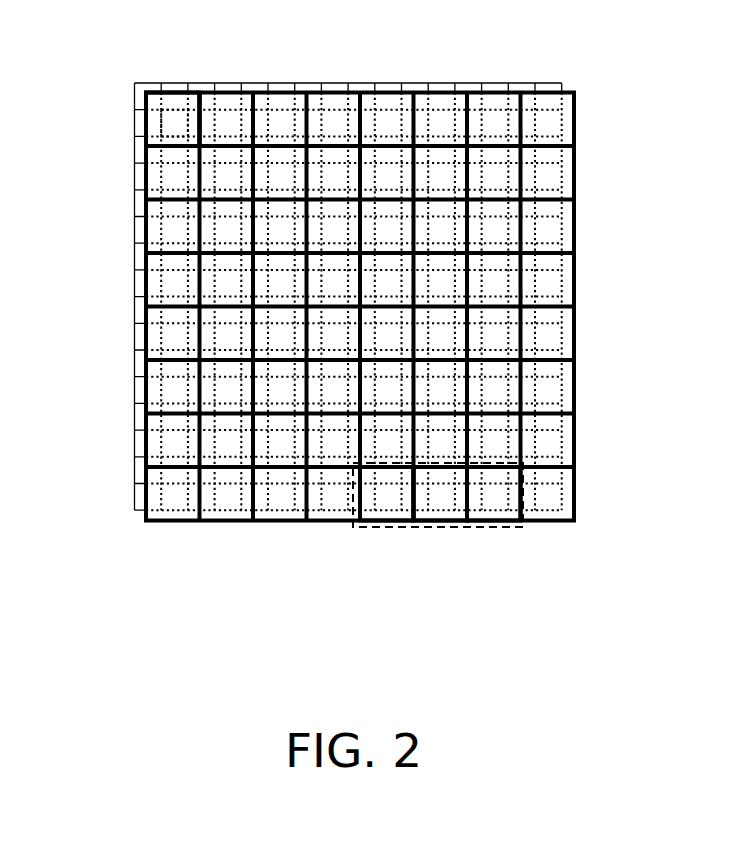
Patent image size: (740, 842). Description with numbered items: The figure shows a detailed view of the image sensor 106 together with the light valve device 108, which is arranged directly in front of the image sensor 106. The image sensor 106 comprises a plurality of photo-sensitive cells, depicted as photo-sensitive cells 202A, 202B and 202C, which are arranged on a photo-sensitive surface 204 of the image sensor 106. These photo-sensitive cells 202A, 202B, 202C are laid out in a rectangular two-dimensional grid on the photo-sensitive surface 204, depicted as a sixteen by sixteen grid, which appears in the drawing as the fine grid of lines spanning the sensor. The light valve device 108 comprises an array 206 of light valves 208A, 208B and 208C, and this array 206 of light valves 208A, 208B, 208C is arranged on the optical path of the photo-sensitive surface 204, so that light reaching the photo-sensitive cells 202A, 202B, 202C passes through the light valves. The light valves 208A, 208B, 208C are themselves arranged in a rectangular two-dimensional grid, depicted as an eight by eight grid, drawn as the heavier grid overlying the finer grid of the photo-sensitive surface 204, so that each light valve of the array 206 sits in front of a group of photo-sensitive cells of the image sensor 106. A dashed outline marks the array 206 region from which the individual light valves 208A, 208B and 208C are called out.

The image sensor 106 is at (123, 289).
The light valve device 108 is at (166, 539).
The photo-sensitive cell 202A is at (145, 91).
The photo-sensitive cell 202B is at (178, 91).
The photo-sensitive cell 202C is at (202, 90).
The photo-sensitive surface 204 is at (133, 180).
The array of light valves 206 is at (523, 500).
The light valve 208A is at (505, 527).
The light valve 208B is at (447, 527).
The light valve 208C is at (393, 527).